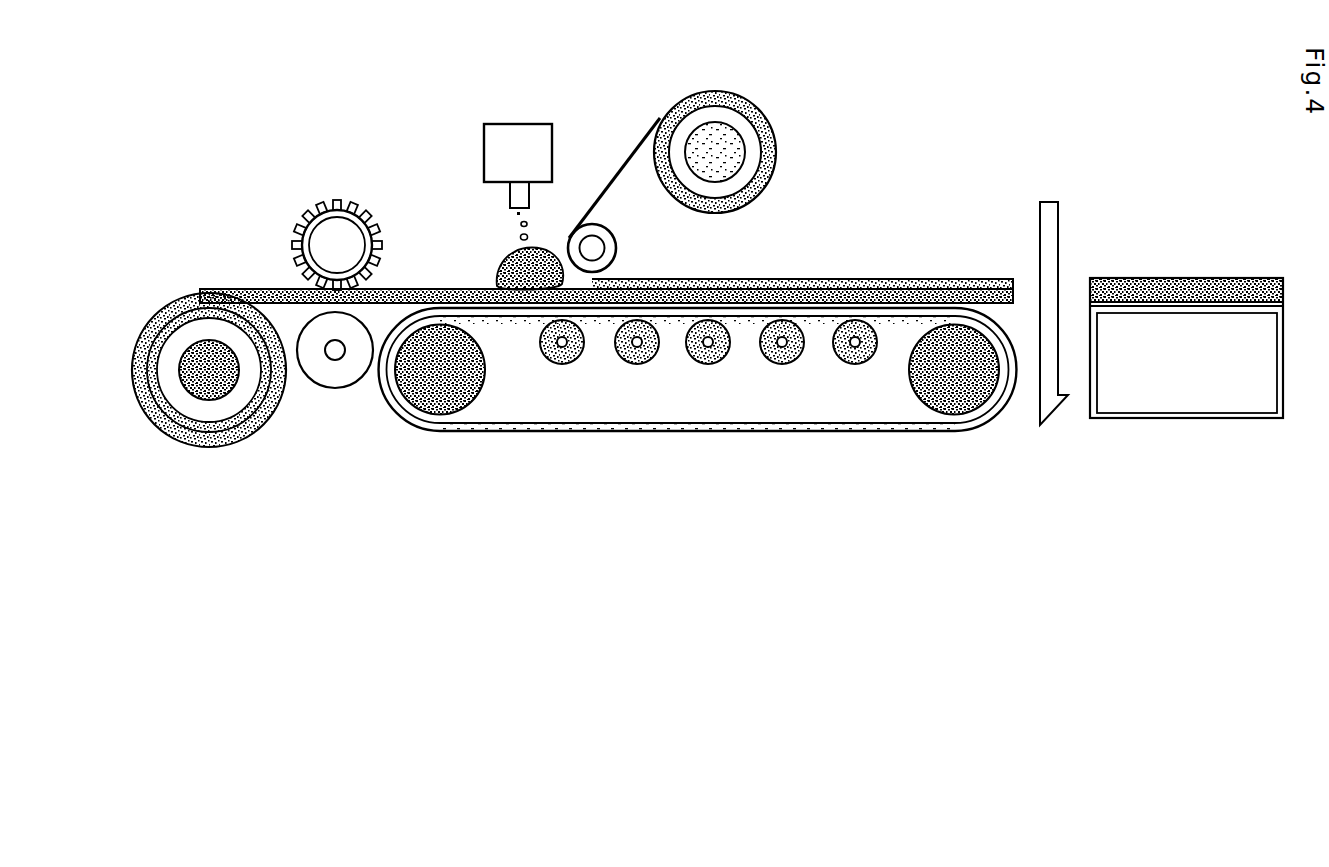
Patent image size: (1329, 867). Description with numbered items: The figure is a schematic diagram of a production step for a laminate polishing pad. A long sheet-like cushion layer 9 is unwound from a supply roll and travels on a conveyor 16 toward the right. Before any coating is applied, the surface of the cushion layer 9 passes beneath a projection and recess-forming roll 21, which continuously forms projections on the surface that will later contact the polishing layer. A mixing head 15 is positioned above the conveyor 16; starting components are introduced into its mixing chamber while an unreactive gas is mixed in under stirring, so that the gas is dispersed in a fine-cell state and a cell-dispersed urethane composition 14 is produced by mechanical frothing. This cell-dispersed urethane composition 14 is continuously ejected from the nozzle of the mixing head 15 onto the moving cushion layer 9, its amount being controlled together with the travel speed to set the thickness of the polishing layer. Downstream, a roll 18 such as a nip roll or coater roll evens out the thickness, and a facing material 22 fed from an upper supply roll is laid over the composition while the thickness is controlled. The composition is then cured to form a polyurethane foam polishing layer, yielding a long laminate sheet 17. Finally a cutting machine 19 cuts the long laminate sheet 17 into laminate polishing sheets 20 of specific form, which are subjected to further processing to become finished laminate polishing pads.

The cushion layer 9 is at (200, 286).
The cell-dispersed urethane composition 14 is at (496, 244).
The mixing head 15 is at (518, 182).
The conveyor 16 is at (698, 369).
The long laminate sheet 17 is at (808, 272).
The roll 18 is at (620, 247).
The cutting machine 19 is at (1027, 229).
The laminate polishing sheet 20 is at (1162, 278).
The projection and recess-forming roll 21 is at (322, 197).
The facing material 22 is at (777, 127).